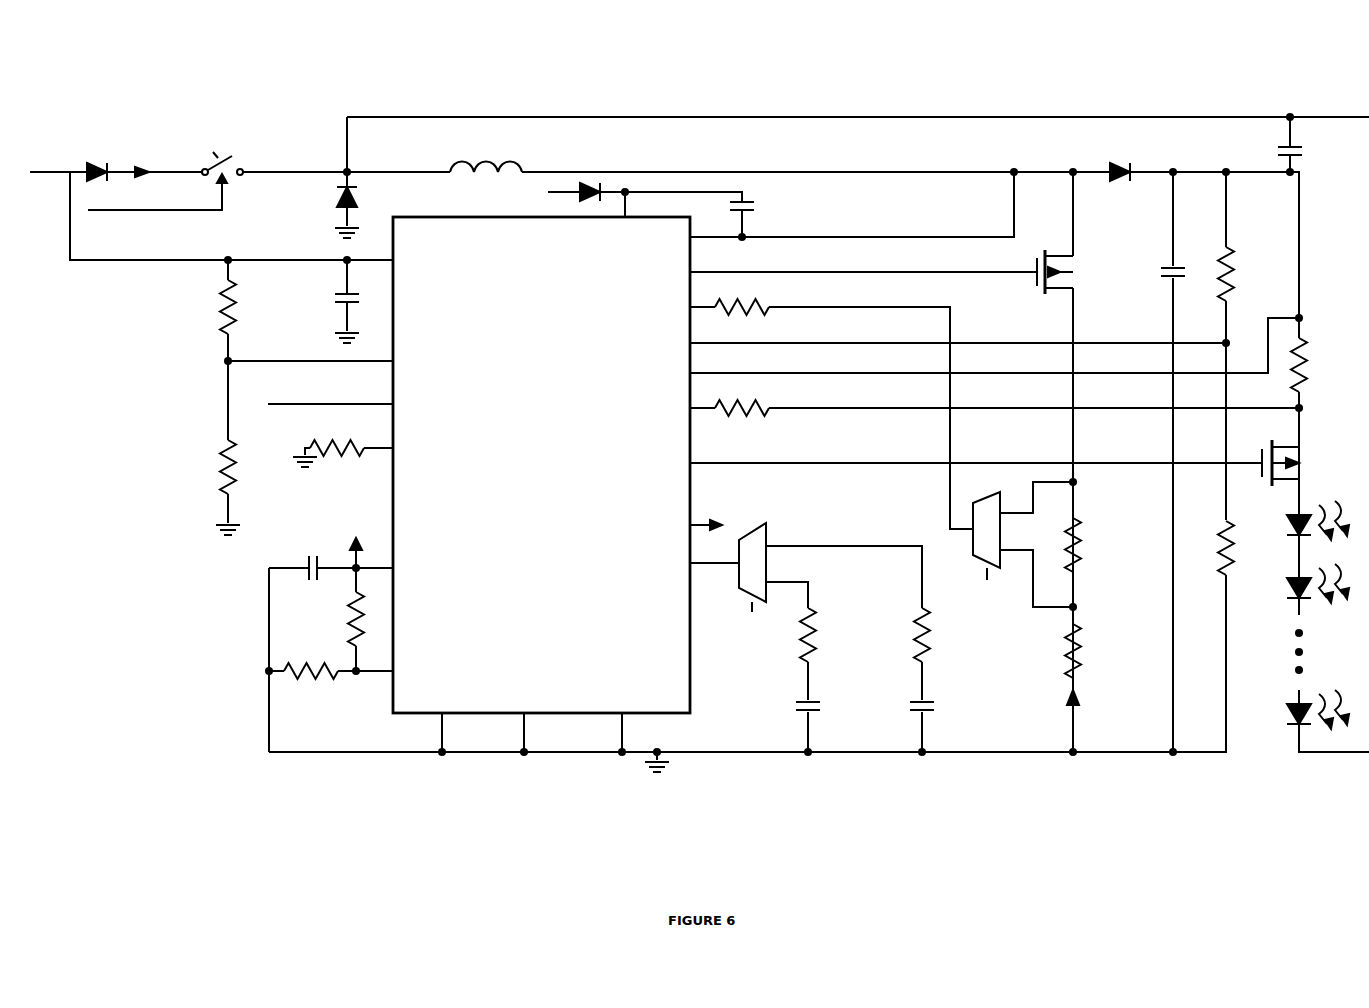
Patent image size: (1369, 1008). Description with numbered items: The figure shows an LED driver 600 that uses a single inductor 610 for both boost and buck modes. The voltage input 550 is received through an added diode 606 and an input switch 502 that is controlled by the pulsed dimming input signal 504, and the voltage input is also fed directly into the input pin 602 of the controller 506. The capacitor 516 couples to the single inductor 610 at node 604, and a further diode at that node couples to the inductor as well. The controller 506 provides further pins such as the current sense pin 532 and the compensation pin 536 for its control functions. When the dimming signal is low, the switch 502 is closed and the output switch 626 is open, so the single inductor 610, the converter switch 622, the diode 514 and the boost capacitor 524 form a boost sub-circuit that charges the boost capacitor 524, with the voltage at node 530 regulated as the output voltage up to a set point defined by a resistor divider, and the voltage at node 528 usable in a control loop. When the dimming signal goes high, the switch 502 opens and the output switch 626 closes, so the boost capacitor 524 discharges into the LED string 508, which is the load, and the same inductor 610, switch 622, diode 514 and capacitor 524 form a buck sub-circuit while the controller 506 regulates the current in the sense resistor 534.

The LED driver 600 is at (763, 24).
The input voltage VIN 550 is at (46, 170).
The diode 606 is at (95, 168).
The input switch 502 is at (232, 152).
The pulsed dimming input signal 504 is at (115, 215).
The node 604 is at (345, 165).
The single inductor 610 is at (503, 153).
The input pin IN 602 is at (397, 264).
The controller 506 is at (541, 465).
The CS current sense pin 532 is at (650, 307).
The COMP compensation pin 536 is at (640, 553).
The switch 622 is at (1033, 276).
The diode 514 is at (1128, 165).
The node 530 is at (1176, 178).
The capacitor CBOOST 524 is at (1170, 285).
The capacitor 516 is at (1308, 160).
The resistor RCS_LED 534 is at (1308, 340).
The node 528 is at (1078, 482).
The switch P5 626 is at (1260, 488).
The LED string 508 is at (1290, 730).